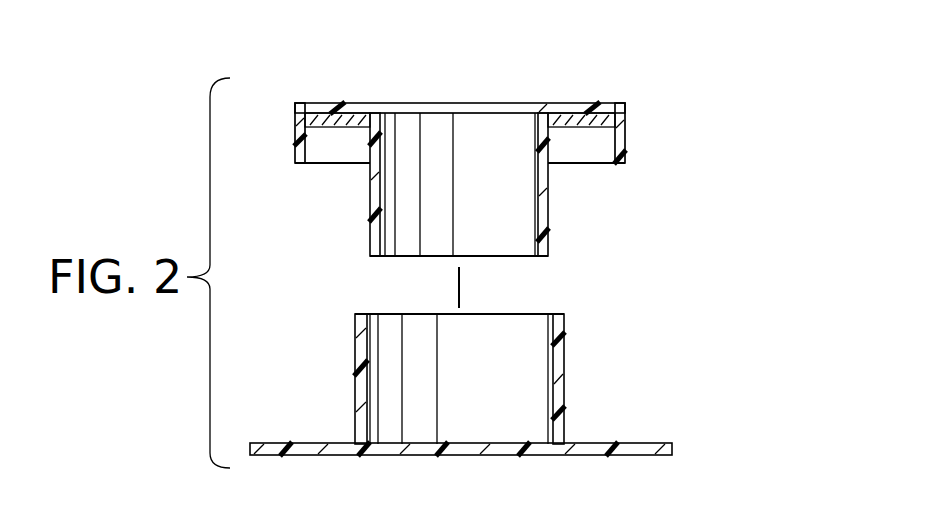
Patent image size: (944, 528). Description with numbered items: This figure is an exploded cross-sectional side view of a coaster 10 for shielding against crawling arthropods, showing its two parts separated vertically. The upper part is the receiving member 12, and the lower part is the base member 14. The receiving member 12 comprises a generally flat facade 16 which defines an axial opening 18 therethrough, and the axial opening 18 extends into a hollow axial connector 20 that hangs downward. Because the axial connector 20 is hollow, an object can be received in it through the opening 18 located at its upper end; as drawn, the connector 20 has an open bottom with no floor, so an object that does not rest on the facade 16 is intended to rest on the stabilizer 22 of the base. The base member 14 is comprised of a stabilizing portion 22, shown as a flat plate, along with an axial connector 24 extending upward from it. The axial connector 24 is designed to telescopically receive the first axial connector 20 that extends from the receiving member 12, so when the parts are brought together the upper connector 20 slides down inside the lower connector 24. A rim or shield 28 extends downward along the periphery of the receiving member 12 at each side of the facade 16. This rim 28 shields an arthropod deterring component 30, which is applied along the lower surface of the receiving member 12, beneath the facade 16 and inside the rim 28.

The coaster 10 is at (610, 282).
The receiving member 12 is at (627, 174).
The base member 14 is at (618, 387).
The facade 16 is at (548, 102).
The axial opening 18 is at (441, 102).
The axial connector 20 is at (550, 207).
The stabilizing portion 22 is at (650, 452).
The axial connector 24 is at (567, 380).
The rim 28 is at (292, 132).
The arthropod deterring component 30 is at (350, 106).